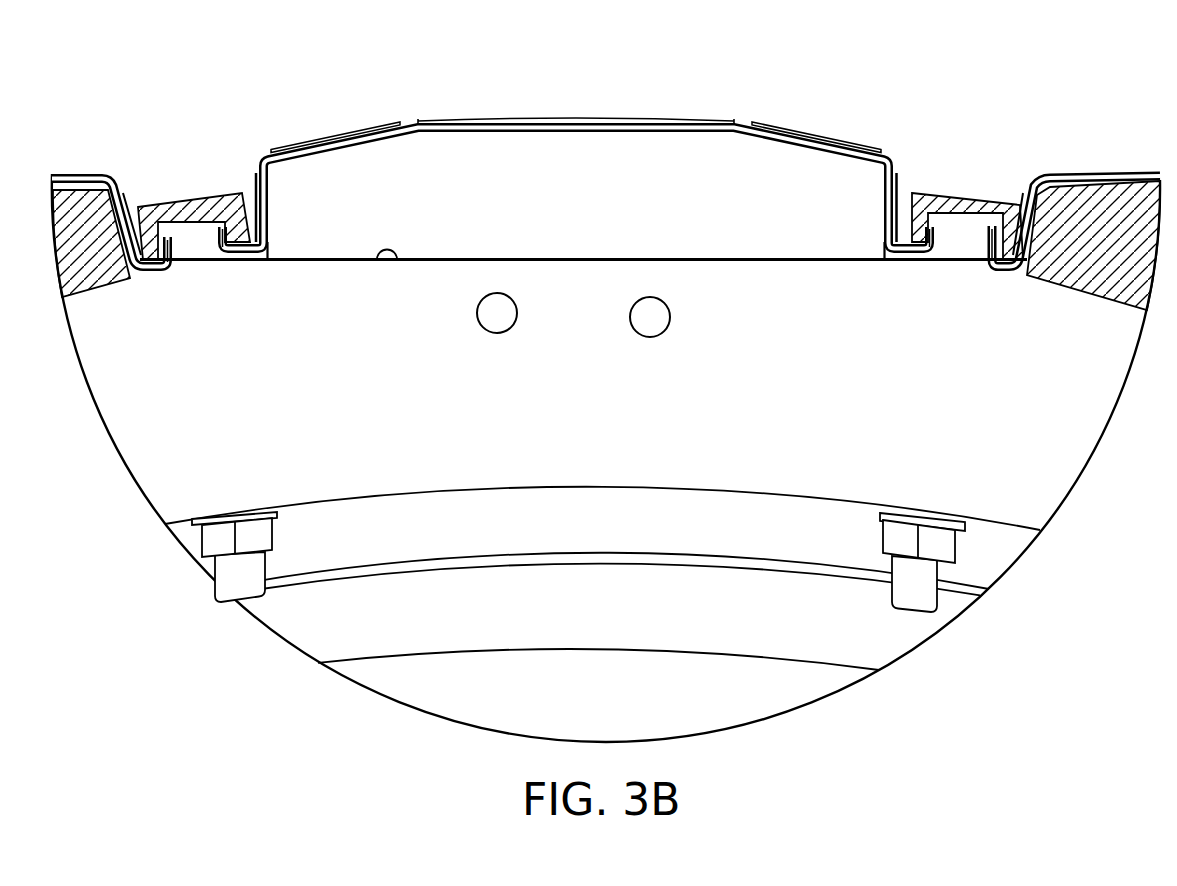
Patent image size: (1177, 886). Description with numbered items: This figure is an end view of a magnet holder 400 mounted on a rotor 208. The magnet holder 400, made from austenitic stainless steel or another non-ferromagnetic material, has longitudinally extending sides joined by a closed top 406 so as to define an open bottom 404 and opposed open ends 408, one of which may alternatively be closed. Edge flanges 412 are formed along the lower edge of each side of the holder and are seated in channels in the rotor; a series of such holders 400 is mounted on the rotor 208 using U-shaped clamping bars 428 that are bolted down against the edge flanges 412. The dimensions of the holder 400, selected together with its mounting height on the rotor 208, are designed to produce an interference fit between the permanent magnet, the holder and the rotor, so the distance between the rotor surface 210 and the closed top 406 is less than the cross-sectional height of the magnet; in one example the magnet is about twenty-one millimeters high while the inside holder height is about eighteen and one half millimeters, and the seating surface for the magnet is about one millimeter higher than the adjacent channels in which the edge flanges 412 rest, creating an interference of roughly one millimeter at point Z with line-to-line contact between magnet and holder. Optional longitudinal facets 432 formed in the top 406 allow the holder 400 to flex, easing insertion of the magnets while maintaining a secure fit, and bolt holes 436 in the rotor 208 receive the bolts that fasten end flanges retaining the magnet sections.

The rotor 208 is at (155, 410).
The rotor surface 210 is at (377, 262).
The magnet holder 400 is at (700, 111).
The open bottom 404 is at (729, 250).
The closed top 406 is at (572, 118).
The open ends 408 is at (727, 190).
The edge flanges 412 is at (152, 272).
The U-shaped clamping bars 428 is at (187, 200).
The longitudinal facets 432 is at (340, 141).
The bolt holes 436 is at (633, 332).
The point Z is at (588, 118).